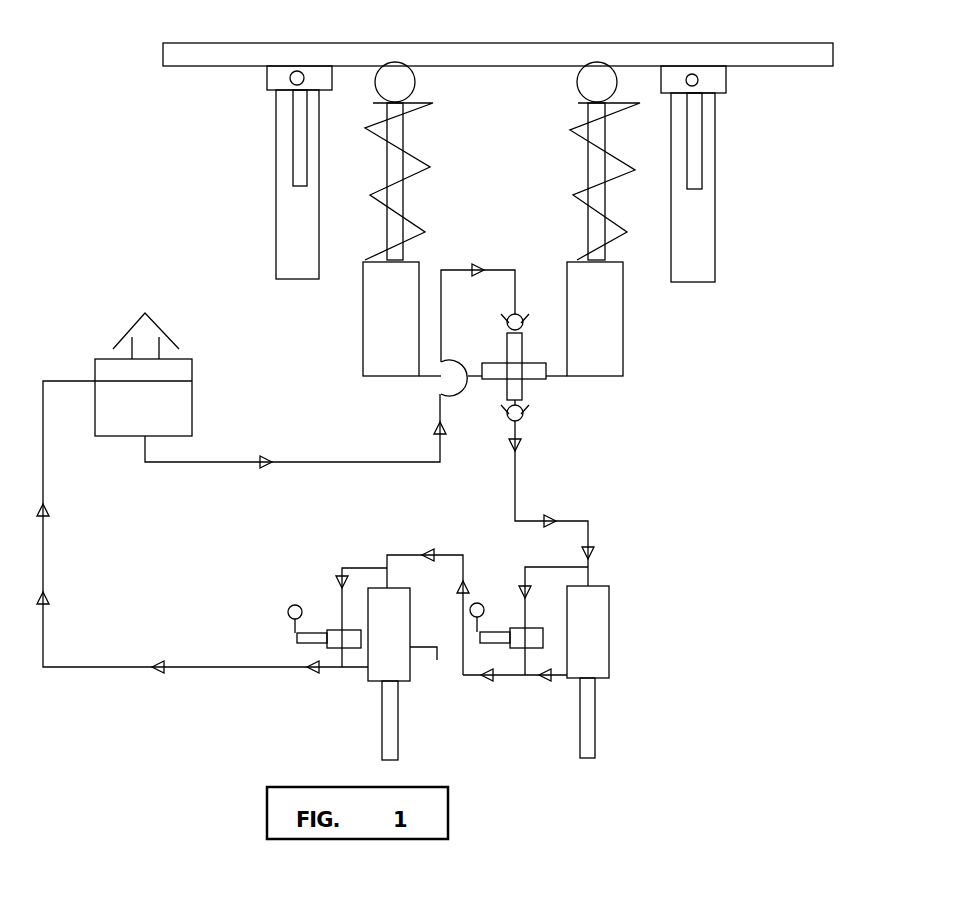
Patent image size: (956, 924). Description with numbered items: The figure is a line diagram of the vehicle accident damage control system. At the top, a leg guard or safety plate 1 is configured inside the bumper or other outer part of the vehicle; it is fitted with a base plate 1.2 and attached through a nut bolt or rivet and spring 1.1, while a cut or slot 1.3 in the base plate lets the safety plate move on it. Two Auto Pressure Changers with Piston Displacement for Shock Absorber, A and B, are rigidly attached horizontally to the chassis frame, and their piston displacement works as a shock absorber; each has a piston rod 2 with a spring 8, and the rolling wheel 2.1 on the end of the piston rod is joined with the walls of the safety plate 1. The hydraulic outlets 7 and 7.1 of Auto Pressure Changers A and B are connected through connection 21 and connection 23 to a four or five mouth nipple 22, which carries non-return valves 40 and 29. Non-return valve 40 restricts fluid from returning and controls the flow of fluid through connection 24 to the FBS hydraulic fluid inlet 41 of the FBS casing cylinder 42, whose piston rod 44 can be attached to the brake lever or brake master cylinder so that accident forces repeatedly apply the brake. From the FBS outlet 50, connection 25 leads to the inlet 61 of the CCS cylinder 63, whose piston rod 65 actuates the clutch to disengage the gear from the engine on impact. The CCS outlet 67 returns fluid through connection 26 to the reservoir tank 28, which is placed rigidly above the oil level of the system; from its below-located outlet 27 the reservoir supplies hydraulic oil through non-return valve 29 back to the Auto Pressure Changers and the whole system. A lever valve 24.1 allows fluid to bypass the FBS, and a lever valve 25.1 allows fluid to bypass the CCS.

The leg guard/safety plate 1 is at (501, 43).
The nut bolt/rivet and spring 1.1 is at (698, 80).
The base plate 1.2 is at (705, 263).
The slot 1.3 is at (702, 174).
The piston rod 2 is at (399, 199).
The wheel 2.1 is at (417, 82).
The spring 8 is at (437, 167).
The Auto Pressure Changer with Piston Displacement for Shock Absorber A is at (380, 344).
The Auto Pressure Changer with Piston Displacement for Shock Absorber B is at (614, 343).
The outlet 7 is at (419, 378).
The outlet 7.1 is at (565, 378).
The connection 21 is at (476, 372).
The nipple 22 is at (519, 372).
The connection 23 is at (528, 380).
The connection 24 is at (514, 488).
The lever valve 24.1 is at (516, 623).
The connection 25 is at (504, 678).
The lever valve 25.1 is at (333, 628).
The connection 26 is at (43, 632).
The outlet of reservoir 27 is at (142, 441).
The reservoir tank 28 is at (204, 368).
The non-return valve 29 is at (507, 316).
The non-return valve 40 is at (500, 420).
The FBS hydraulic fluid inlet 41 is at (592, 586).
The FBS casing cylinder 42 is at (621, 624).
The piston rod 44 is at (596, 747).
The outlet 50 is at (562, 678).
The inlet 61 is at (388, 587).
The CCS cylinder 63 is at (431, 668).
The piston rod 65 is at (400, 753).
The outlet 67 is at (363, 673).